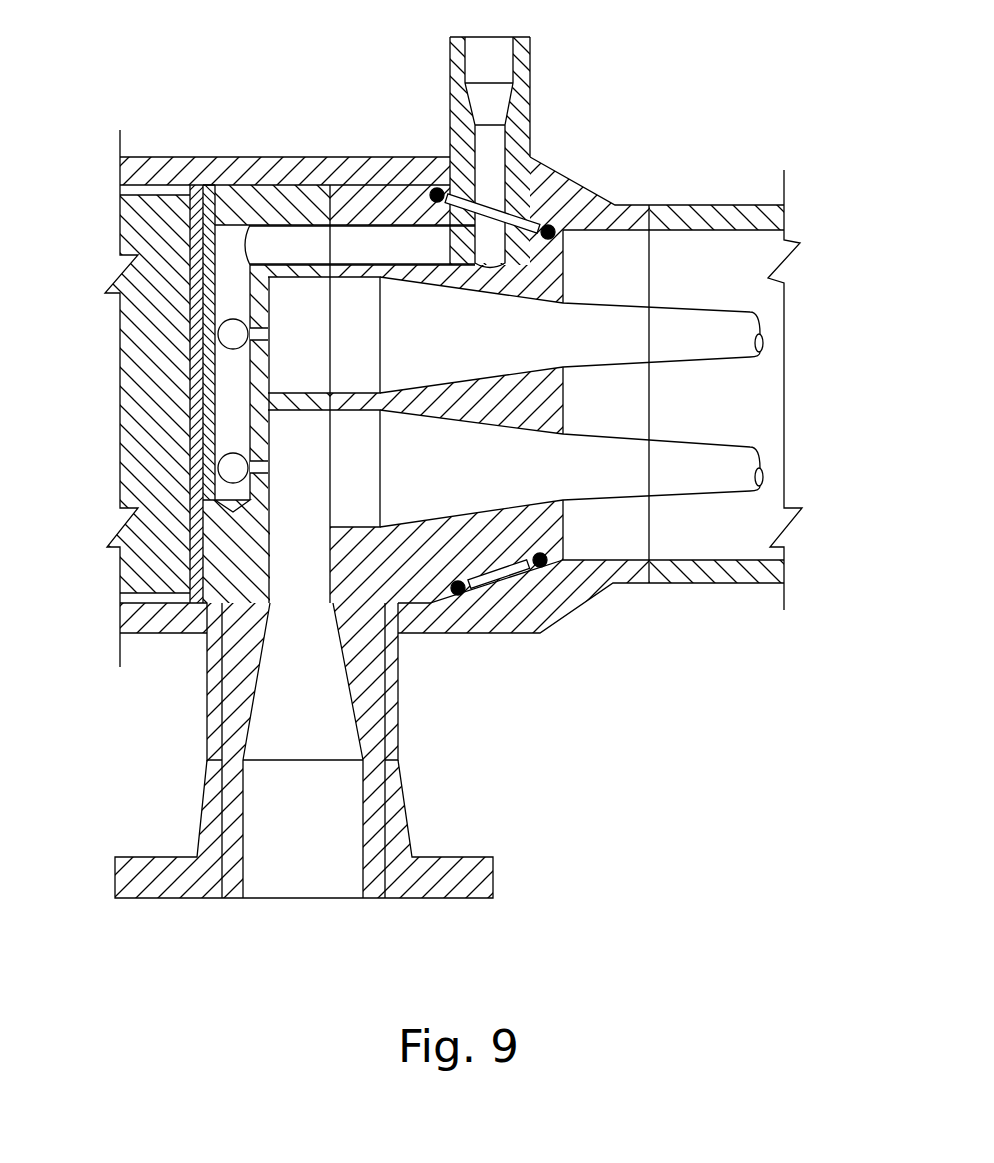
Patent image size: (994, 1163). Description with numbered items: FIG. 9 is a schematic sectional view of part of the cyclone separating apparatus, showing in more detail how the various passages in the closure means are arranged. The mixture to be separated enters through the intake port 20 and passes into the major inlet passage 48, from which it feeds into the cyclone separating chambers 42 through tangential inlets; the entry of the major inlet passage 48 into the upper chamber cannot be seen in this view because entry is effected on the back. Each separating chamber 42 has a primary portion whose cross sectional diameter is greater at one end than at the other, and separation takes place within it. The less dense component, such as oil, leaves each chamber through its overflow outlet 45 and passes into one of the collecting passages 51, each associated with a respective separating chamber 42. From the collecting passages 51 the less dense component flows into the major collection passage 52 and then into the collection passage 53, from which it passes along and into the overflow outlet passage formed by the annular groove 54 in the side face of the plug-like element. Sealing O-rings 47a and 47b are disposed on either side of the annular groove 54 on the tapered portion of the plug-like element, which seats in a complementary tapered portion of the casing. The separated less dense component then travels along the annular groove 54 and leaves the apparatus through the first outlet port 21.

The intake port 20 is at (350, 901).
The first outlet port 21 is at (490, 36).
The separating chambers 42 is at (742, 312).
The overflow outlet 45 is at (266, 337).
The O-ring 47a is at (460, 590).
The O-ring 47b is at (545, 563).
The major inlet passage 48 is at (285, 597).
The collecting passages 51 is at (238, 323).
The major collection passage 52 is at (217, 420).
The collection passage 53 is at (282, 231).
The annular groove 54 is at (508, 202).